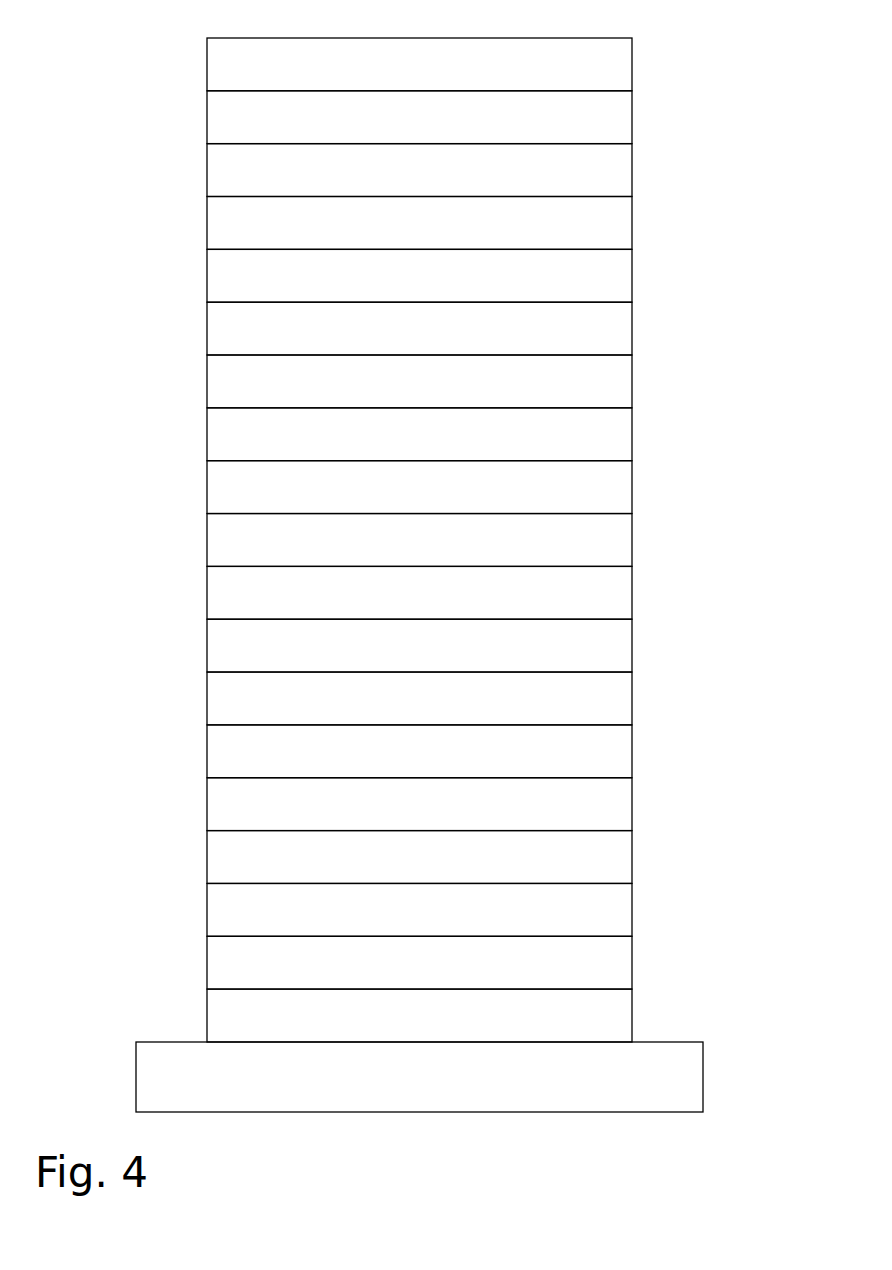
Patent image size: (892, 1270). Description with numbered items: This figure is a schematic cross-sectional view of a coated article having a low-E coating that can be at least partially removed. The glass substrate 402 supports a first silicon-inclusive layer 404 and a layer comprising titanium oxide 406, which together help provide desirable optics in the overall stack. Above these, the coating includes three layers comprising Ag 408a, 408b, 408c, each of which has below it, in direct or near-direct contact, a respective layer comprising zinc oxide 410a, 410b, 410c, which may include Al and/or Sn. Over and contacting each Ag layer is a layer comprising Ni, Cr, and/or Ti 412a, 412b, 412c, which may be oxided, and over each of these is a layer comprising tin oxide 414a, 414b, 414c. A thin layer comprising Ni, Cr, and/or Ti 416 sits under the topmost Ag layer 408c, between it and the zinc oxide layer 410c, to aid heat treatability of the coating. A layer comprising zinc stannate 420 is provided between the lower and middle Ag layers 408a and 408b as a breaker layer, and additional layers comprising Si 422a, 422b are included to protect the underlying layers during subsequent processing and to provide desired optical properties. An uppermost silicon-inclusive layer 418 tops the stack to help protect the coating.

The uppermost silicon-inclusive layer 418 is at (632, 64).
The layer comprising tin oxide 414c is at (632, 117).
The layer comprising Ni, Cr, and/or Ti 412c is at (632, 170).
The third layer comprising Ag 408c is at (632, 222).
The thin layer comprising Ni, Cr, and/or Ti 416 is at (632, 275).
The layer comprising zinc oxide 410c is at (632, 328).
The layer comprising Si 422b is at (632, 381).
The layer comprising tin oxide 414b is at (632, 434).
The layer comprising Ni, Cr, and/or Ti 412b is at (632, 487).
The second layer comprising Ag 408b is at (632, 540).
The layer comprising zinc oxide 410b is at (632, 592).
The layer comprising Si 422a is at (632, 645).
The layer comprising zinc stannate 420 is at (632, 698).
The layer comprising tin oxide 414a is at (632, 751).
The layer comprising Ni, Cr, and/or Ti 412a is at (632, 804).
The first layer comprising Ag 408a is at (632, 857).
The layer comprising zinc oxide 410a is at (632, 910).
The layer comprising titanium oxide 406 is at (632, 962).
The first silicon-inclusive layer 404 is at (632, 1015).
The substrate 402 is at (703, 1077).